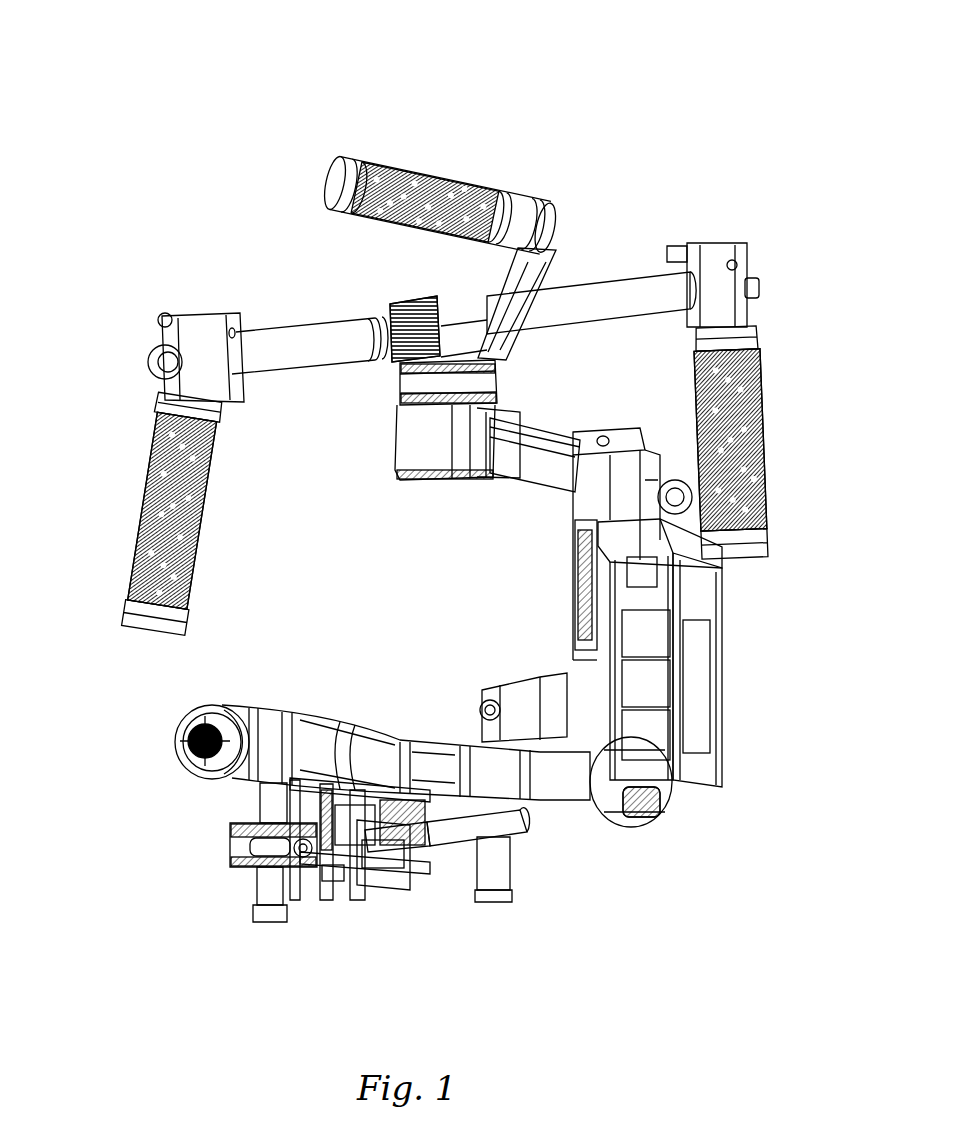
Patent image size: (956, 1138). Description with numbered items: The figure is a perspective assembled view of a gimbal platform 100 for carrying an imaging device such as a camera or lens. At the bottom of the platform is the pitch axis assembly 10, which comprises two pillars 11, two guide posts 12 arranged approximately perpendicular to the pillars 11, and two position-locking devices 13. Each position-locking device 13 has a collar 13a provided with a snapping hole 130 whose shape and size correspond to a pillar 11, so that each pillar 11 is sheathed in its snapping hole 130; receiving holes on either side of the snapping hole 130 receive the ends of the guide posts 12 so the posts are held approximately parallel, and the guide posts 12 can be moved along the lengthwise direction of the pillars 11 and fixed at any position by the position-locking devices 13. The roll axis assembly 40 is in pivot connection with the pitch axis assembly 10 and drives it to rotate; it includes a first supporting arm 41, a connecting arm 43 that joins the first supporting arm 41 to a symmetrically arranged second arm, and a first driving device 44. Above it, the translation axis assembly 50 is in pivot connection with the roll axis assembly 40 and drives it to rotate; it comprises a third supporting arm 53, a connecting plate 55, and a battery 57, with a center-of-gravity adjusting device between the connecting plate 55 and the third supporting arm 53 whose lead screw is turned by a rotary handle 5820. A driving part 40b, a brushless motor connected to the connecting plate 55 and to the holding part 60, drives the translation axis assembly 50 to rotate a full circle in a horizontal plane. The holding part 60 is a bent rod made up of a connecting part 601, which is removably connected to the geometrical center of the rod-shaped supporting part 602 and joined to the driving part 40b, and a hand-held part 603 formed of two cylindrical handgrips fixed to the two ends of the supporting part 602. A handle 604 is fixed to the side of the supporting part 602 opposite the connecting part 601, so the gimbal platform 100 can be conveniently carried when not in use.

The gimbal platform 100 is at (407, 37).
The holding part 60 is at (513, 127).
The handle 604 is at (367, 222).
The supporting part 602 is at (320, 330).
The hand-held part 603 is at (757, 452).
The connecting part 601 is at (411, 384).
The roll axis assembly 40 is at (155, 730).
The driving part 40b is at (402, 435).
The first driving device 44 is at (187, 753).
The first supporting arm 41 is at (407, 773).
The connecting arm 43 is at (547, 783).
The translation axis assembly 50 is at (553, 402).
The connecting plate 55 is at (530, 445).
The third supporting arm 53 is at (605, 590).
The rotary handle 5820 is at (740, 548).
The battery 57 is at (693, 667).
The pitch axis assembly 10 is at (250, 946).
The position-locking device 13 is at (247, 855).
The snapping hole 130 is at (332, 883).
The collar 13a is at (366, 885).
The pillar 11 is at (287, 920).
The guide post 12 is at (428, 880).